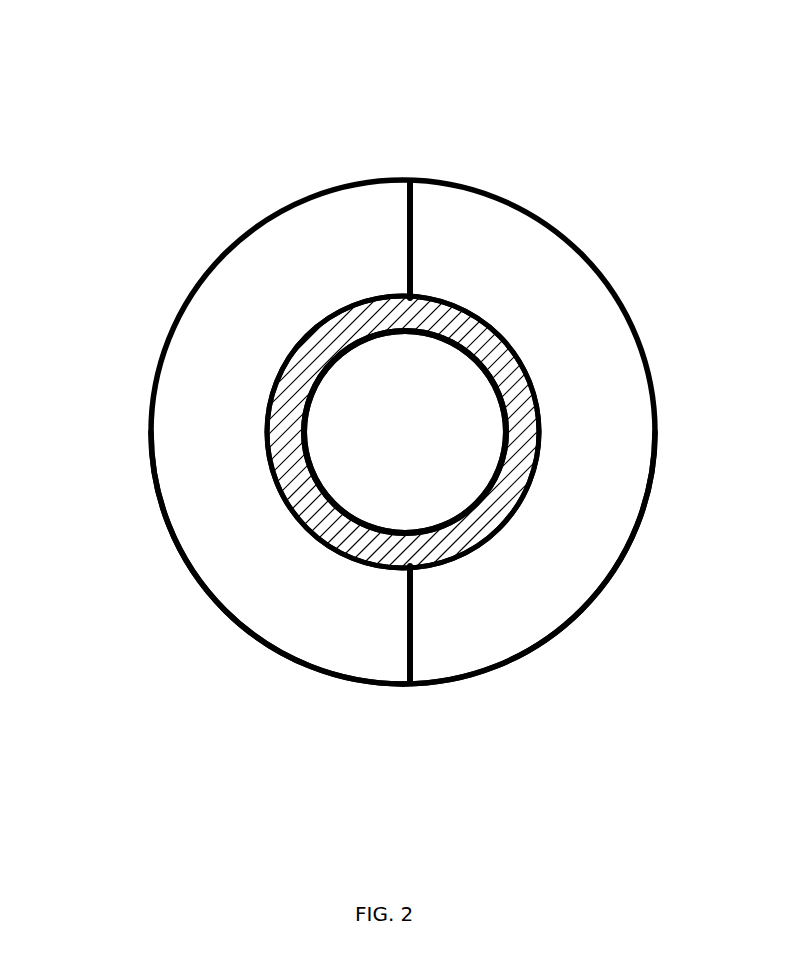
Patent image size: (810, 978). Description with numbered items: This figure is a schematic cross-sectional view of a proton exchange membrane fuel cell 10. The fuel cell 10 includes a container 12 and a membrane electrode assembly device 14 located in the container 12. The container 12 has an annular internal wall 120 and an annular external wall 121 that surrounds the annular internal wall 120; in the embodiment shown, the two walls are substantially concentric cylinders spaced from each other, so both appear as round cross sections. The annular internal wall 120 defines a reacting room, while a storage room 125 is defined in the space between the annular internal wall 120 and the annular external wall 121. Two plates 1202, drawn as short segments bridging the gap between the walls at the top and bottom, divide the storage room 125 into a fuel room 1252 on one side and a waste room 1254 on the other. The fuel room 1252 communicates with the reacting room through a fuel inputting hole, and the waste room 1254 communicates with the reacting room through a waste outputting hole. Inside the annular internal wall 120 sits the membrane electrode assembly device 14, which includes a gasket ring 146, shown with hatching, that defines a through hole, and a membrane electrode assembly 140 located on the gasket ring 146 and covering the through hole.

The proton exchange membrane fuel cell 10 is at (410, 118).
The container 12 is at (227, 240).
The membrane electrode assembly device 14 is at (717, 327).
The annular internal wall 120 is at (283, 505).
The annular external wall 121 is at (148, 465).
The storage room 125 is at (513, 749).
The membrane electrode assembly 140 is at (413, 435).
The gasket ring 146 is at (468, 330).
The plates 1202 is at (407, 242).
The fuel room 1252 is at (303, 602).
The waste room 1254 is at (490, 602).